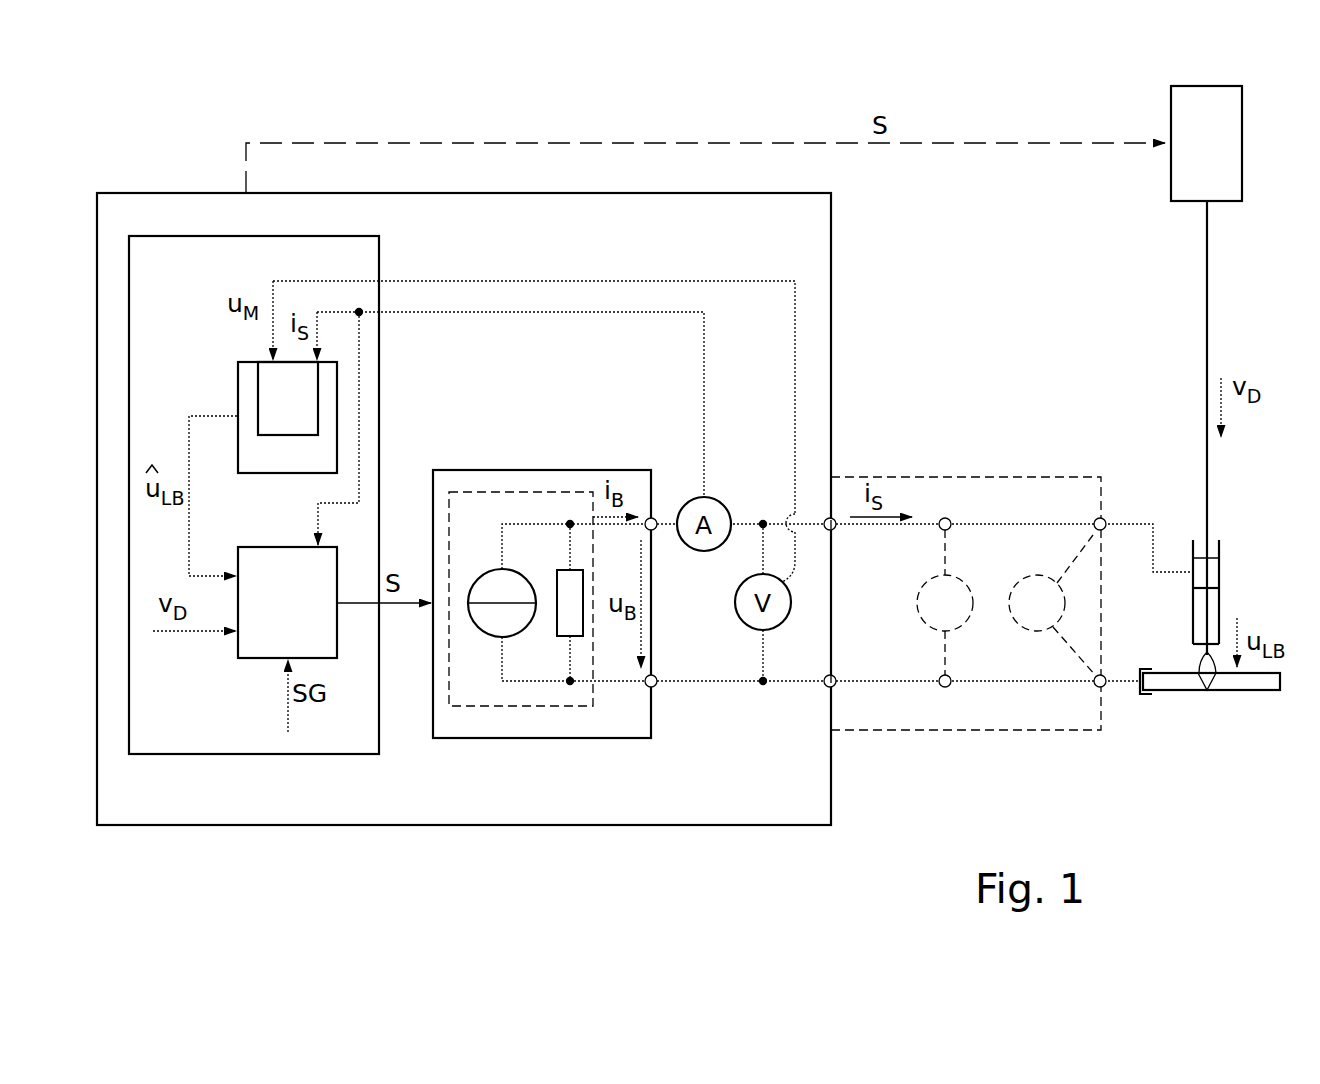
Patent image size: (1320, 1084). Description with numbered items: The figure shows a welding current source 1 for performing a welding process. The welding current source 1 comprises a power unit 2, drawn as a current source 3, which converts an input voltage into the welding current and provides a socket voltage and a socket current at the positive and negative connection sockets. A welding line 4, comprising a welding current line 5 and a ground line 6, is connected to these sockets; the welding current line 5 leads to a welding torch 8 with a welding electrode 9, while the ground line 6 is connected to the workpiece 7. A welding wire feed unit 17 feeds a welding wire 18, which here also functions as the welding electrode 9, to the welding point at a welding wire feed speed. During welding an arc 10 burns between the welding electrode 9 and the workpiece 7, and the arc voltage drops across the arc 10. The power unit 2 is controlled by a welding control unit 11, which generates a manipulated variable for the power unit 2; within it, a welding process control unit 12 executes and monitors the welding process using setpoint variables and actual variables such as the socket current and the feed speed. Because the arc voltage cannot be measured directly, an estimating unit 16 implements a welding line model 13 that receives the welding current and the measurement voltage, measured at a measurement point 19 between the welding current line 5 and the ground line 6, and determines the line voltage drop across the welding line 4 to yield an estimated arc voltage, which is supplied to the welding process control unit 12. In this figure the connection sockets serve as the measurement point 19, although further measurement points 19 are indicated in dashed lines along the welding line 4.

The welding current source 1 is at (834, 262).
The power unit 2 is at (505, 738).
The current source 3 is at (560, 706).
The welding line 4 is at (955, 731).
The welding current line 5 is at (985, 523).
The ground line 6 is at (915, 685).
The workpiece 7 is at (1232, 690).
The welding torch 8 is at (1232, 600).
The welding electrode 9 is at (1205, 663).
The arc 10 is at (1190, 658).
The welding control unit 11 is at (256, 756).
The welding process control unit 12 is at (302, 620).
The welding line model 13 is at (304, 413).
The estimating unit 16 is at (238, 393).
The welding wire feed unit 17 is at (1222, 157).
The welding wire 18 is at (1205, 303).
The measurement point 19 is at (818, 640).